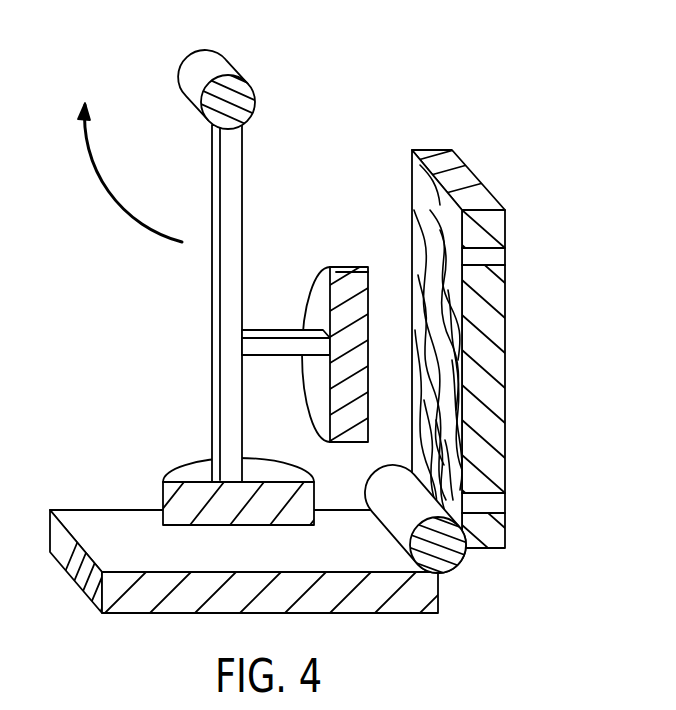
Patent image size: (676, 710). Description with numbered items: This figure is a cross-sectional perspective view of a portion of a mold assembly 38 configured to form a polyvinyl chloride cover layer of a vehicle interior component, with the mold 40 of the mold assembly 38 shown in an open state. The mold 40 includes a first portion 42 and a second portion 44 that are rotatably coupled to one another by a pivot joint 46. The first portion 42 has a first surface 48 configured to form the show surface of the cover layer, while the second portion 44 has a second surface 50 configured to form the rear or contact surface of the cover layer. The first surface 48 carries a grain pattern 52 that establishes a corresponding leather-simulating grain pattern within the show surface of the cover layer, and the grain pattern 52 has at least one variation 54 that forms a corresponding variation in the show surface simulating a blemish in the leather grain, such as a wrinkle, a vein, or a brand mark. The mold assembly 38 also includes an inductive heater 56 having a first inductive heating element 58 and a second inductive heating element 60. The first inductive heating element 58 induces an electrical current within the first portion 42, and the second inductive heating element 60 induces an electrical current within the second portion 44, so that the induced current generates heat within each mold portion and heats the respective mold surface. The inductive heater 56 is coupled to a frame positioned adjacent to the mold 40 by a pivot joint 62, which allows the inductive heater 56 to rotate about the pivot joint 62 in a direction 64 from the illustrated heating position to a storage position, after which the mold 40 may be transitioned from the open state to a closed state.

The mold assembly 38 is at (498, 132).
The mold 40 is at (515, 490).
The first portion 42 is at (489, 346).
The second portion 44 is at (387, 610).
The pivot joint 46 is at (453, 557).
The first surface 48 is at (420, 190).
The second surface 50 is at (130, 520).
The grain pattern 52 is at (408, 297).
The variation 54 is at (448, 328).
The inductive heater 56 is at (270, 223).
The first inductive heating element 58 is at (350, 412).
The second inductive heating element 60 is at (308, 508).
The pivot joint 62 is at (247, 93).
The direction 64 is at (113, 192).